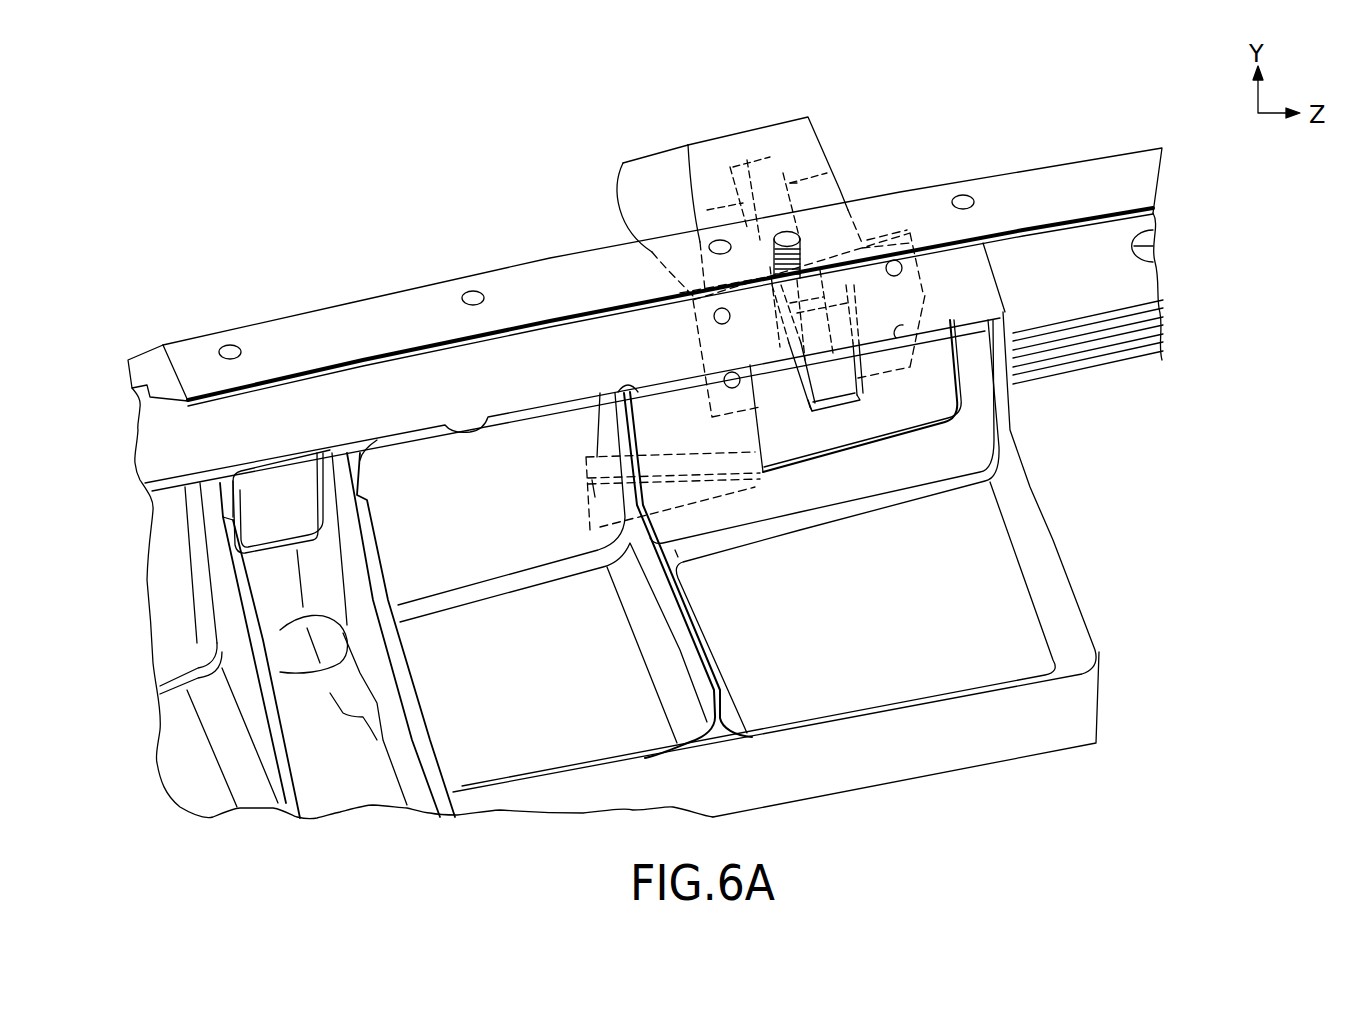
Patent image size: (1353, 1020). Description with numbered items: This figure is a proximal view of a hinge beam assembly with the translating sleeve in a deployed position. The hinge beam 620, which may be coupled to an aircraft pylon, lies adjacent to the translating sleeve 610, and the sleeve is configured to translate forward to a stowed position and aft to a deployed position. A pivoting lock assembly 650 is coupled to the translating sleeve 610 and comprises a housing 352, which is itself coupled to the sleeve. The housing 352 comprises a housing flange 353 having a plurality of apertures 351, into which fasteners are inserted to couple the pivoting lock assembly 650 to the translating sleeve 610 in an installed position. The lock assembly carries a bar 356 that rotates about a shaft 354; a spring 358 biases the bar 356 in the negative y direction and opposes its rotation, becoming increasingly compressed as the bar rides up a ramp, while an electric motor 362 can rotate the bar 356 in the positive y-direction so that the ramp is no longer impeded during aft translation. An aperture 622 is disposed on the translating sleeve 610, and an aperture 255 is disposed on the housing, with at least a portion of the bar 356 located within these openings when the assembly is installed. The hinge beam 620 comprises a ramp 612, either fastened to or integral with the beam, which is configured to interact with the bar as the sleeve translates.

The translating sleeve 610 is at (1110, 175).
The hinge beam 620 is at (1040, 666).
The ramp 612 is at (592, 488).
The pivoting lock assembly 650 is at (838, 128).
The housing 352 is at (752, 165).
The electric motor 362 is at (640, 157).
The shaft 354 is at (722, 212).
The bar 356 is at (773, 203).
The spring 358 is at (795, 238).
The housing flange 353 is at (913, 262).
The plurality of apertures 351 is at (724, 380).
The aperture 622 is at (858, 392).
The aperture 255 is at (800, 413).